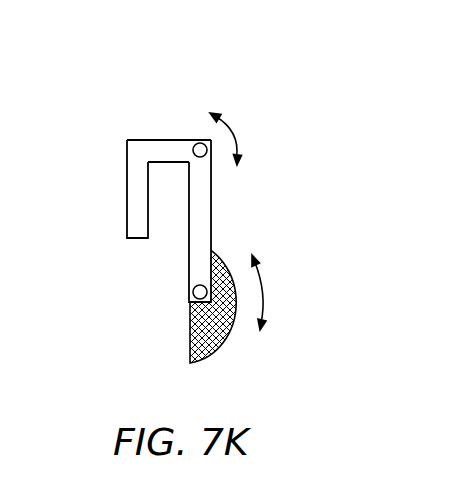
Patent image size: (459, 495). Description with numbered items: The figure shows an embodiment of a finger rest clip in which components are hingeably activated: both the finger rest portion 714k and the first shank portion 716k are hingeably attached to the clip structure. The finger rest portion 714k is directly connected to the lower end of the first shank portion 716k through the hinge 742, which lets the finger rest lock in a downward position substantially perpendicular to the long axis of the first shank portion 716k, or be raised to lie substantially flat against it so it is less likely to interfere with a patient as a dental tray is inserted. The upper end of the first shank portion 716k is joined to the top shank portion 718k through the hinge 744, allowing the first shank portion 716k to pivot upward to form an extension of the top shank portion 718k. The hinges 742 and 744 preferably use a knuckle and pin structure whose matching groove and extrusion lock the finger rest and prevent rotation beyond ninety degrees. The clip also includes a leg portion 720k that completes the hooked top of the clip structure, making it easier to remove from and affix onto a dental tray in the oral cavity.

The finger rest portion 714k is at (227, 340).
The first shank portion 716k is at (211, 187).
The top shank portion 718k is at (143, 140).
The left leg portion 720k is at (127, 193).
The hinge 742 is at (189, 302).
The hinge 744 is at (199, 140).